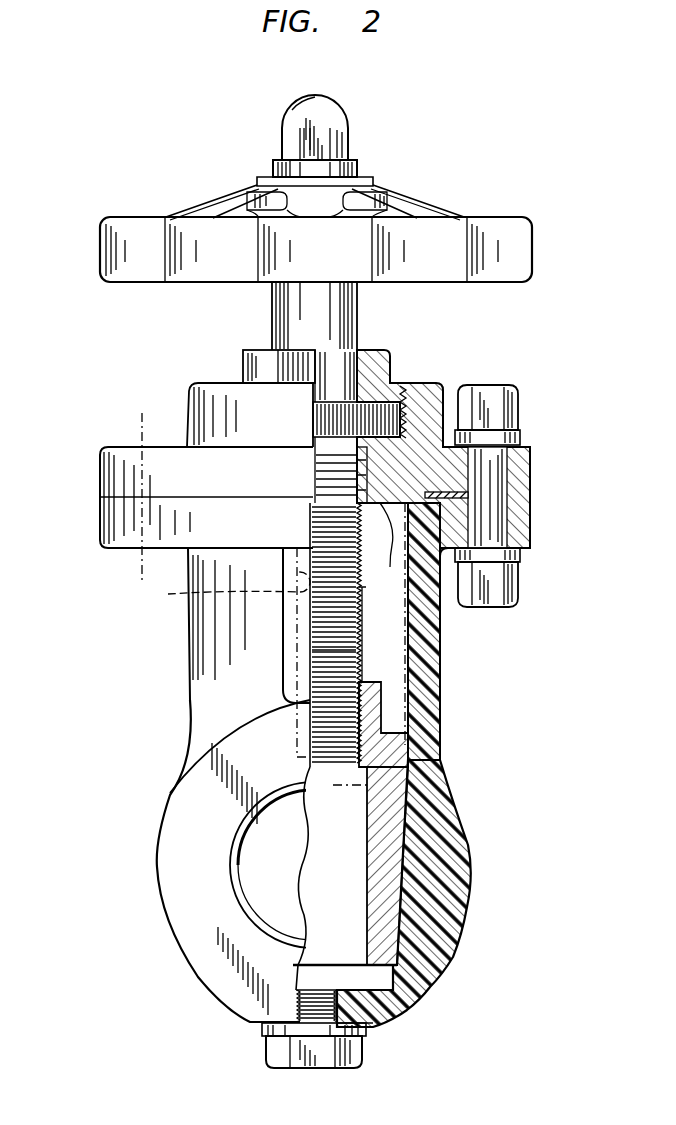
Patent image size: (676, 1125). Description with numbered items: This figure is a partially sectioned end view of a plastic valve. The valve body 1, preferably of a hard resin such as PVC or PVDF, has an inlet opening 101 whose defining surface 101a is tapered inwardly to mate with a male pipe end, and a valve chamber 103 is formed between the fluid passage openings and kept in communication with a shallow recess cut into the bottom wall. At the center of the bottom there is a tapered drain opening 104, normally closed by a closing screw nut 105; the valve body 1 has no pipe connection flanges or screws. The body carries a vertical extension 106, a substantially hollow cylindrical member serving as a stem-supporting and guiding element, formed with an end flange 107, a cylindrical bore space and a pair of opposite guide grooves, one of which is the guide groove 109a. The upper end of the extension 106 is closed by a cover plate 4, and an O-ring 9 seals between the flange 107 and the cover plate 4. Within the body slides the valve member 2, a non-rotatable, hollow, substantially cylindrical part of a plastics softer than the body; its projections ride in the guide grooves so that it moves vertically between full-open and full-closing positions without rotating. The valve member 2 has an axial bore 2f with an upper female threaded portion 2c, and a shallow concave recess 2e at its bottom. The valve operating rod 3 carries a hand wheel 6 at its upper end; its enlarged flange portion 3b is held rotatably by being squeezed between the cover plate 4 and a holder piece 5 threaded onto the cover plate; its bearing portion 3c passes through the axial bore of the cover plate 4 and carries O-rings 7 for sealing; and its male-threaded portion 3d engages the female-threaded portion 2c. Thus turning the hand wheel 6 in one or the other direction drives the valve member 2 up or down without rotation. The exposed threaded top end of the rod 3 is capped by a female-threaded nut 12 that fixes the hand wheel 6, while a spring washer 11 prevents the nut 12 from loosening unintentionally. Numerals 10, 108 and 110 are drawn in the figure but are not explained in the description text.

The valve body 1 is at (168, 809).
The valve member 2 is at (396, 862).
The upper female threaded portion 2c is at (348, 705).
The shallow concave recess 2e is at (374, 1018).
The axial bore 2f is at (340, 888).
The valve operating rod 3 is at (356, 316).
The enlarged flange portion 3b is at (328, 416).
The bearing portion 3c is at (325, 441).
The male-threaded portion 3d is at (335, 653).
The cover plate 4 is at (110, 472).
The holder piece 5 is at (262, 352).
The hand wheel 6 is at (122, 247).
The O-rings 7 is at (387, 546).
The O-ring 9 is at (452, 516).
The bolt 10 is at (514, 409).
The spring washer 11 is at (275, 171).
The female-threaded nut 12 is at (290, 128).
The inlet opening 101 is at (281, 867).
The defining surface 101a is at (234, 888).
The valve chamber 103 is at (388, 982).
The tapered drain opening 104 is at (321, 992).
The closing screw nut 105 is at (362, 1048).
The vertical extension 106 is at (190, 626).
The end flange 107 is at (110, 522).
The bonnet wall 108 is at (395, 652).
The guide groove 109a is at (209, 509).
The washer 110 is at (400, 1001).